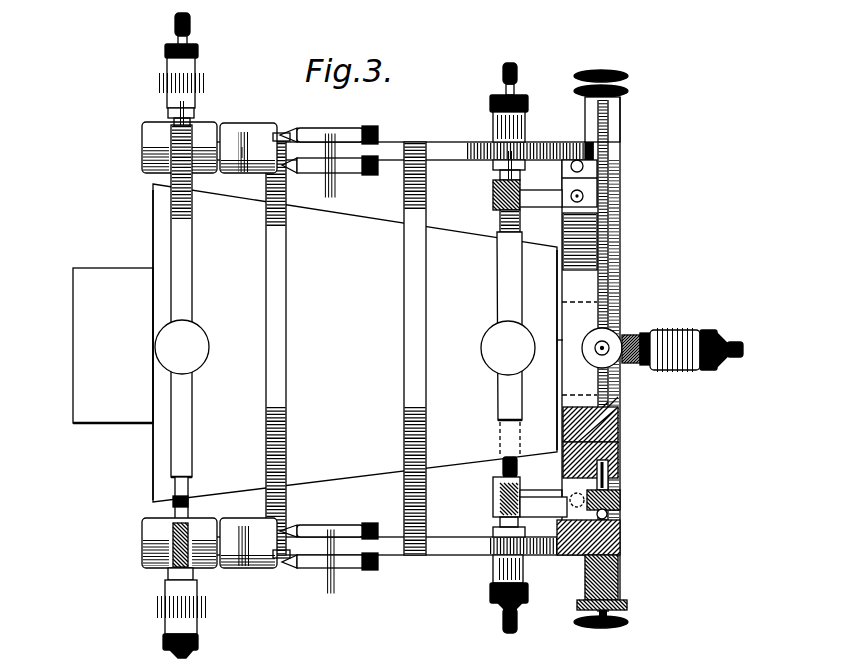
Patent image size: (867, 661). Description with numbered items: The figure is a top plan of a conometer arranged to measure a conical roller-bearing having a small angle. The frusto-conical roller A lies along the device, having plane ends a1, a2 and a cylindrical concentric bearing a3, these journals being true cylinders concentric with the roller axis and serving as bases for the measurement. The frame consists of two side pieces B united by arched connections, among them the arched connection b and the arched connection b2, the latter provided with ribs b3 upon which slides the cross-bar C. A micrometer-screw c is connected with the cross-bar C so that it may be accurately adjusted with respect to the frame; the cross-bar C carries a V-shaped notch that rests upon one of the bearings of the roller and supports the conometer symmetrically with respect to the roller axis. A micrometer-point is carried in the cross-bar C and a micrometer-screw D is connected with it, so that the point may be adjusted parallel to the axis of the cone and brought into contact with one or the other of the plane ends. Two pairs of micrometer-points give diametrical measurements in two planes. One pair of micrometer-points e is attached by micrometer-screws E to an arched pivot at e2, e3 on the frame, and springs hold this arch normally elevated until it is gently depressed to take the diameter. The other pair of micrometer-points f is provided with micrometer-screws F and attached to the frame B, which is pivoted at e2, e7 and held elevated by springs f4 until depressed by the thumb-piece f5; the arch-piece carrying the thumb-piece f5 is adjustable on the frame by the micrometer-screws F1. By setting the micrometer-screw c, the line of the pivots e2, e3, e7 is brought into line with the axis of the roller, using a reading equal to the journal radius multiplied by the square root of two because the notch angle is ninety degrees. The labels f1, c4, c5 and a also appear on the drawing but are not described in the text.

The frusto-conical roller A is at (355, 343).
The plane end a1 is at (153, 466).
The plane end a2 is at (560, 388).
The cylindrical concentric bearing a3 is at (113, 345).
The side piece B is at (432, 141).
The arched connection b is at (277, 305).
The arched connection b2 is at (620, 243).
The rib b3 is at (593, 433).
The micrometer-screw F is at (166, 57).
The micrometer-screw F1 is at (347, 130).
The micrometer-point f is at (168, 504).
The threaded rod f1 is at (410, 320).
The spring f4 is at (587, 553).
The thumb-piece f5 is at (182, 347).
The micrometer-screw E is at (523, 103).
The micrometer-point e is at (500, 460).
The pivot e2 is at (608, 515).
The pivot e3 is at (608, 483).
The pivot e7 is at (610, 547).
The micrometer-screw c is at (608, 337).
The bracket c4 is at (572, 503).
The disk c5 is at (508, 348).
The cross-bar C is at (618, 412).
The micrometer-screw D is at (688, 330).
The plate edge a is at (560, 338).